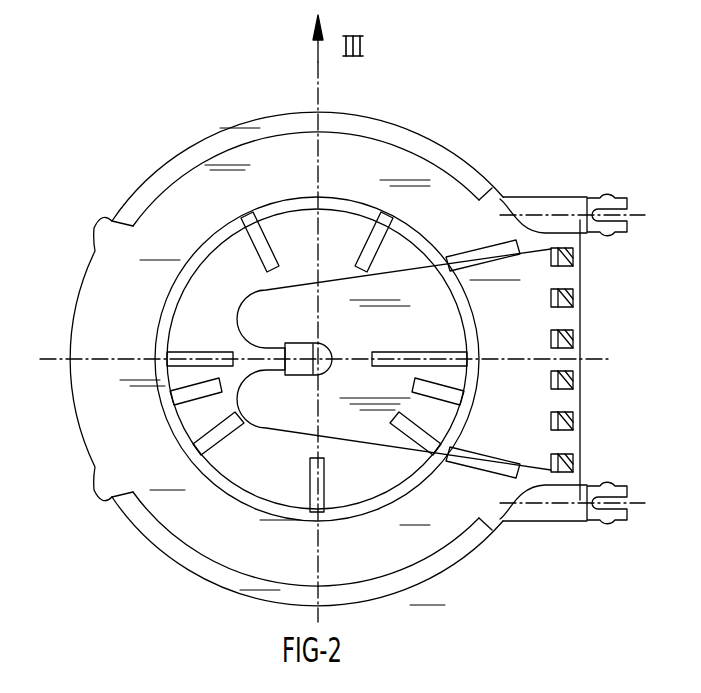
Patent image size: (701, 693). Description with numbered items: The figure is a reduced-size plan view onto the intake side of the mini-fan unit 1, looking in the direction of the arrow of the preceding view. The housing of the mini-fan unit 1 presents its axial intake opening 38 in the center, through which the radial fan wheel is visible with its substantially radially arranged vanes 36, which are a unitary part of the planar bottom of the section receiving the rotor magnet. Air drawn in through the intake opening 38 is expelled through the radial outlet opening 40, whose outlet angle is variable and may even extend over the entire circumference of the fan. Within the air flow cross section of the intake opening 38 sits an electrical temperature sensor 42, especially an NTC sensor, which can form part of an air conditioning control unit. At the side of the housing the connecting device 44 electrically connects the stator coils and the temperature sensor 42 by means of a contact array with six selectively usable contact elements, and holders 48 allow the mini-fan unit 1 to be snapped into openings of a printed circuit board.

The mini-fan unit 1 is at (506, 149).
The vanes 36 is at (263, 245).
The axial intake opening 38 is at (165, 423).
The radial outlet opening 40 is at (502, 176).
The temperature sensor 42 is at (302, 367).
The connecting device 44 is at (555, 483).
The holders 48 is at (608, 197).